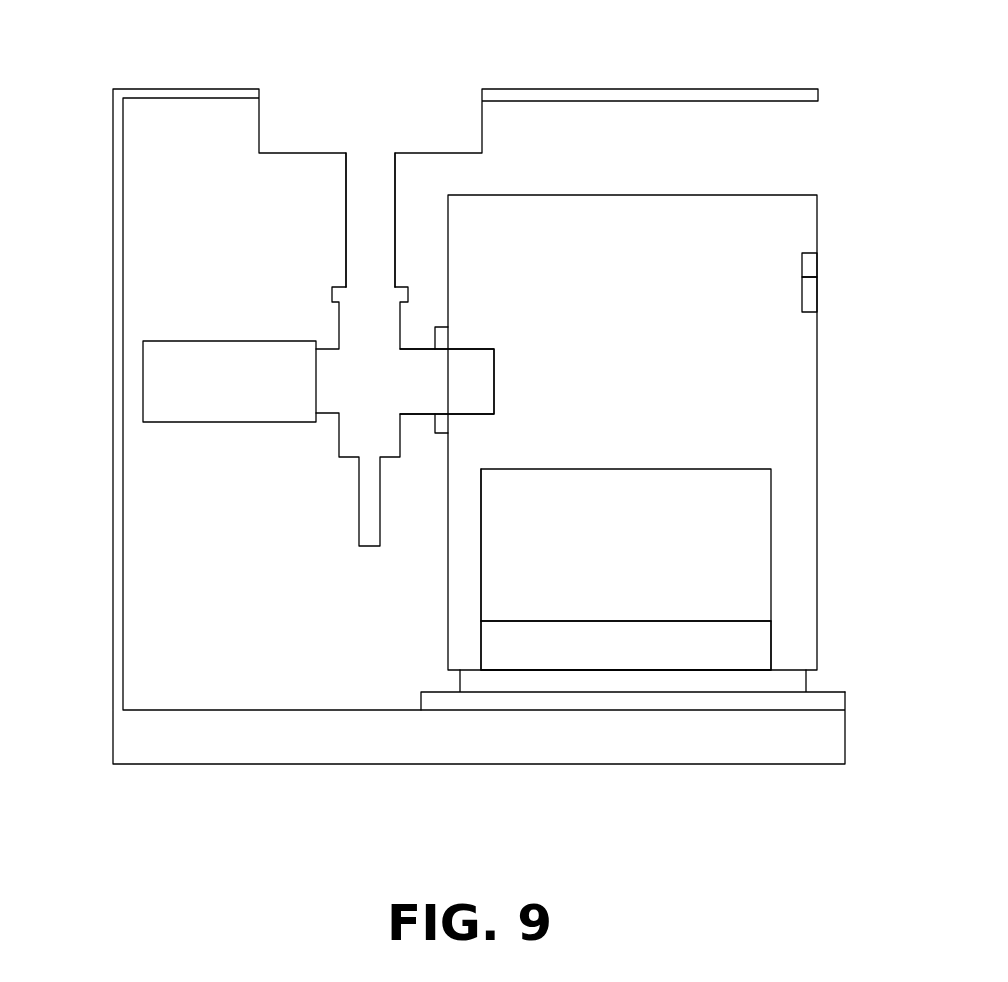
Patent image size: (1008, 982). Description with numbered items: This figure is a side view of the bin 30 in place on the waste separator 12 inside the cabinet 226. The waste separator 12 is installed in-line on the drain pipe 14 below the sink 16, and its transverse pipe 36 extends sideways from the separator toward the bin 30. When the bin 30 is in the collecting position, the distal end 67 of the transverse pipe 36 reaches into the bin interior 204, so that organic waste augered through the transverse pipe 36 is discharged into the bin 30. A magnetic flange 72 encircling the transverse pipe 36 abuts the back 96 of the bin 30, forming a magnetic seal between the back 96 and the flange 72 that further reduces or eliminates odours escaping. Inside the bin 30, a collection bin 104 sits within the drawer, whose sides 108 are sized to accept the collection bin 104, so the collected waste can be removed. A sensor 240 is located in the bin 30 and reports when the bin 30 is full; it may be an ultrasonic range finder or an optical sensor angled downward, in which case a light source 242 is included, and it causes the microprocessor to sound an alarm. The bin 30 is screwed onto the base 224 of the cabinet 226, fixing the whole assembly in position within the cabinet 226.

The waste separator 12 is at (166, 312).
The drain pipe 14 is at (363, 202).
The sink 16 is at (369, 108).
The bin 30 is at (795, 218).
The transverse pipe 36 is at (416, 360).
The distal end 67 is at (495, 378).
The magnetic flange 72 is at (440, 423).
The back 96 is at (448, 572).
The collection bin 104 is at (750, 578).
The sides 108 is at (748, 645).
The bin interior 204 is at (783, 500).
The base 224 is at (368, 709).
The cabinet 226 is at (123, 612).
The sensor 240 is at (810, 295).
The light source 242 is at (810, 262).